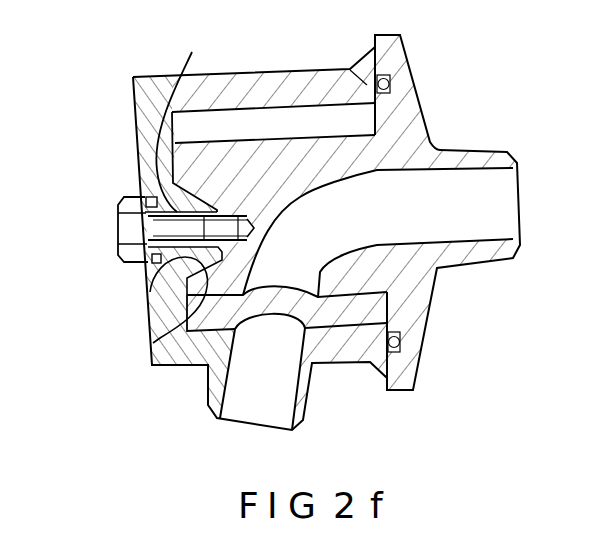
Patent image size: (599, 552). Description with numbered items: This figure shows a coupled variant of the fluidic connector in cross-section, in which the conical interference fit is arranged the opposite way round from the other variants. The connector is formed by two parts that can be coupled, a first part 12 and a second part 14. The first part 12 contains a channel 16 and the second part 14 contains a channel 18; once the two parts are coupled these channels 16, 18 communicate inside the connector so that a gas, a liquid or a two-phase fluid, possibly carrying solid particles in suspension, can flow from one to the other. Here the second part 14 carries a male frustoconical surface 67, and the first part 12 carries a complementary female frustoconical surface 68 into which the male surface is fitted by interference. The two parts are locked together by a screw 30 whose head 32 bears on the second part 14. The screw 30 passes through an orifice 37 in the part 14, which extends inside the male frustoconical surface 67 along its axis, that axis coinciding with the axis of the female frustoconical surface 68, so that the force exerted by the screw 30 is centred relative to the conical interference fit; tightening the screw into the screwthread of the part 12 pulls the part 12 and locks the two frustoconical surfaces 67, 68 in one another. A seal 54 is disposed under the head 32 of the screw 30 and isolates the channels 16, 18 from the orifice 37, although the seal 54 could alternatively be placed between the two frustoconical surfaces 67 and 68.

The first part 12 is at (410, 115).
The second part 14 is at (145, 122).
The channel 16 is at (456, 226).
The channel 18 is at (277, 395).
The screw 30 is at (175, 235).
The head 32 is at (127, 255).
The orifice 37 is at (182, 118).
The seal 54 is at (146, 180).
The male frustoconical surface 67 is at (148, 284).
The female frustoconical surface 68 is at (185, 278).